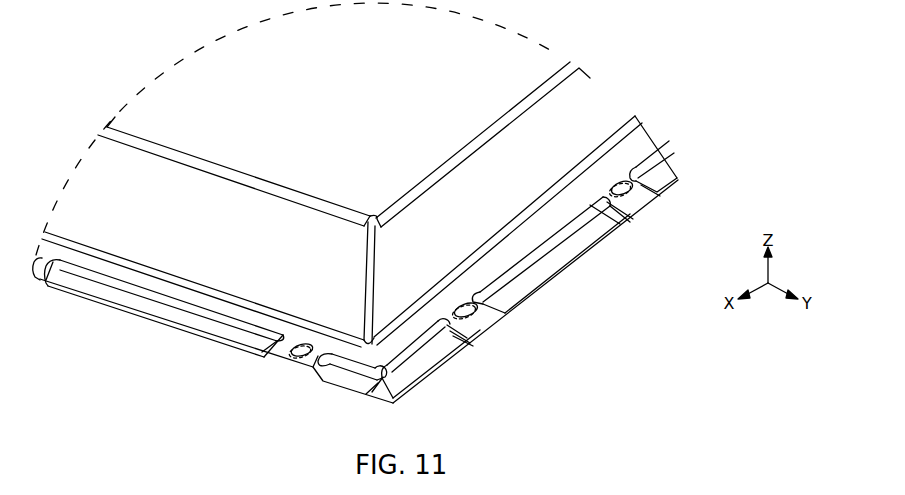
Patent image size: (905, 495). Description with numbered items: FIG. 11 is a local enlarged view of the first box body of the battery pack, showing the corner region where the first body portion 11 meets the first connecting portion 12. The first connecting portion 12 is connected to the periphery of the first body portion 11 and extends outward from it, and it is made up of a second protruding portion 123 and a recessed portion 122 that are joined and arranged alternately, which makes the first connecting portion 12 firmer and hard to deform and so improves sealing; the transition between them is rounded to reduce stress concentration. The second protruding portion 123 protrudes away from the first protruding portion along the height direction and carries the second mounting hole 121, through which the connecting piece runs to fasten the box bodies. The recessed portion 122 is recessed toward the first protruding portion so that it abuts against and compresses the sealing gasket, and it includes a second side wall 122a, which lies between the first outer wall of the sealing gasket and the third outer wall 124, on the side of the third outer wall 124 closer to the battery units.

The first body portion 11 is at (603, 93).
The first connecting portion 12 is at (613, 328).
The second mounting hole 121 is at (476, 312).
The recessed portion 122 is at (533, 287).
The second side wall 122a is at (557, 232).
The second protruding portion 123 is at (636, 197).
The third outer wall 124 is at (438, 367).